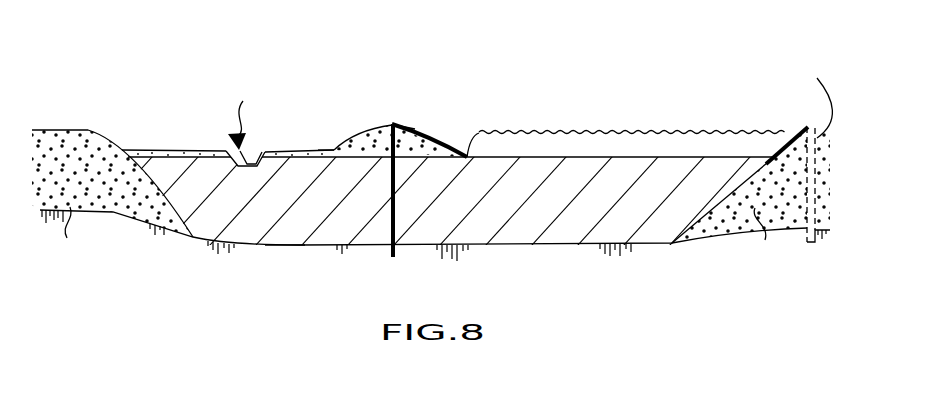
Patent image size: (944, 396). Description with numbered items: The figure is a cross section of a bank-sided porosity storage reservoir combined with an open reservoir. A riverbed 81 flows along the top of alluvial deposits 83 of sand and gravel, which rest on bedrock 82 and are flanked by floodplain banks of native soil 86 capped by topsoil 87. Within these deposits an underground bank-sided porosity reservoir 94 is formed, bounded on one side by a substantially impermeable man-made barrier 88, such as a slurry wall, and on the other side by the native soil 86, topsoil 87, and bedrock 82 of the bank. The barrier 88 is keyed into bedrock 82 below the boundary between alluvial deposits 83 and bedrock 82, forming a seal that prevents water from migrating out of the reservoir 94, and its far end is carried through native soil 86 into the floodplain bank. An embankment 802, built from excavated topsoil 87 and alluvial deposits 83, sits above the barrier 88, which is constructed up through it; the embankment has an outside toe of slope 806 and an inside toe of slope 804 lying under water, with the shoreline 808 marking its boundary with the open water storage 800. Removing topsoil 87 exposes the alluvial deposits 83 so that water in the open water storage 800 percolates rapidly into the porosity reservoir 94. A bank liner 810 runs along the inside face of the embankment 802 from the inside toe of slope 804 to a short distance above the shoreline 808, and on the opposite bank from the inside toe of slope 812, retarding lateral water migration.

The riverbed 81 is at (258, 151).
The bedrock 82 is at (215, 243).
The alluvial deposits 83 is at (284, 241).
The native soil 86 is at (115, 207).
The topsoil 87 is at (147, 150).
The substantially impermeable man-made barrier (SIMM barrier) 88 is at (391, 249).
The bank-sided porosity reservoir 94 is at (552, 211).
The open water storage 800 is at (588, 156).
The embankment 802 is at (372, 128).
The inside toe of slope 804 is at (480, 134).
The outside toe of slope 806 is at (326, 150).
The shoreline 808 is at (428, 133).
The bank liner 810 is at (408, 128).
The inside toe of slope 812 is at (770, 161).